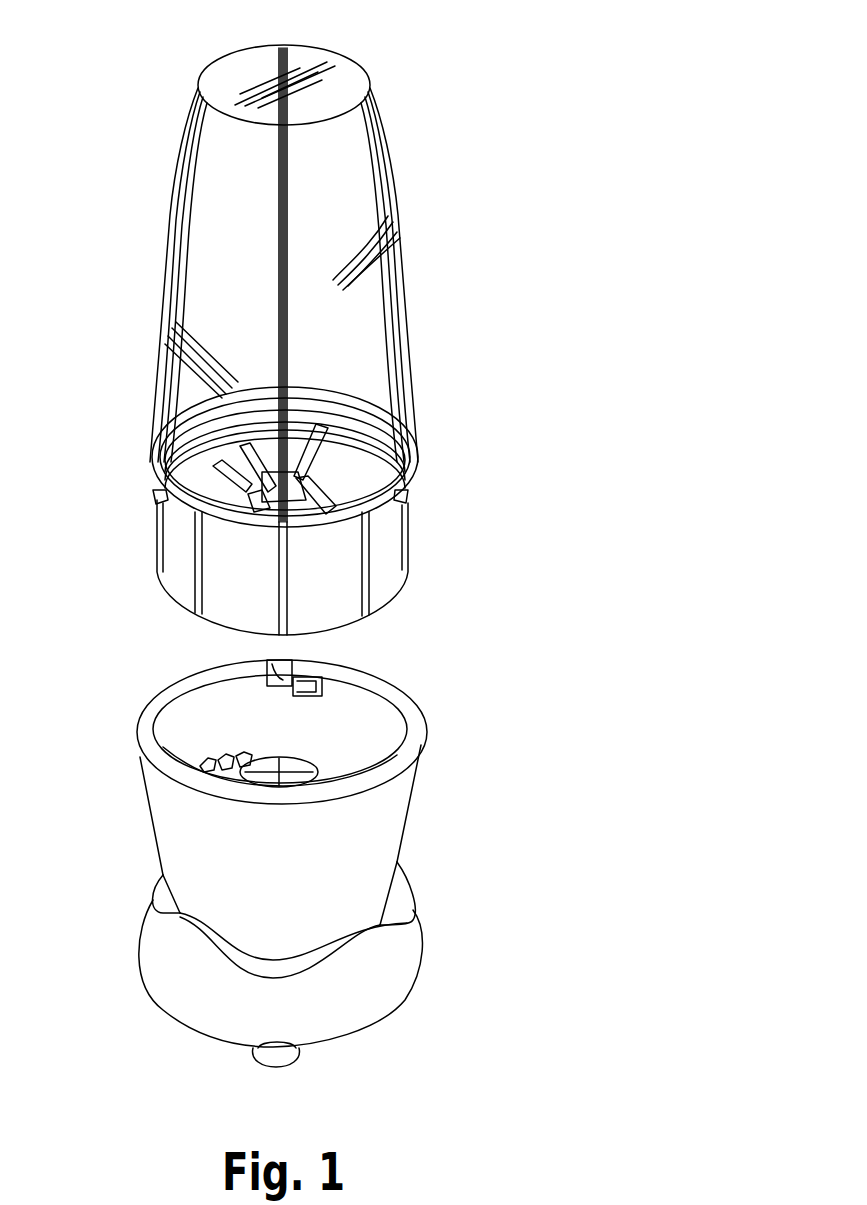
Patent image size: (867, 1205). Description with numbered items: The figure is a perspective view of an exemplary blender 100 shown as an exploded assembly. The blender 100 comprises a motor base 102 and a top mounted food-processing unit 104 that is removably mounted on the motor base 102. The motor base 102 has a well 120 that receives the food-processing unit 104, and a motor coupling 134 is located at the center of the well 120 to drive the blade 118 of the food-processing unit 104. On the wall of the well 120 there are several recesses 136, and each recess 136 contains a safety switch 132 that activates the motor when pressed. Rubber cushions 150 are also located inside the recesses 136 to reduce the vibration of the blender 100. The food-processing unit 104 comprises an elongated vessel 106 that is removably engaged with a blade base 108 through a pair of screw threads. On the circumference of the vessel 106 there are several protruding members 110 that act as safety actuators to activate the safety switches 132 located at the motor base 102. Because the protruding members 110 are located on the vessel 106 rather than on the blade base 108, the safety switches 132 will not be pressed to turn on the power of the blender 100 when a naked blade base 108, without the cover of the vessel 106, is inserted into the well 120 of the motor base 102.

The blender 100 is at (443, 1023).
The motor base 102 is at (375, 865).
The food-processing unit 104 is at (455, 227).
The elongated vessel 106 is at (353, 150).
The blade base 108 is at (390, 553).
The protruding members 110 is at (155, 490).
The blade 118 is at (382, 408).
The well 120 is at (187, 735).
The safety switch 132 is at (313, 672).
The motor coupling 134 is at (307, 763).
The recesses 136 is at (268, 663).
The rubber cushions 150 is at (303, 683).